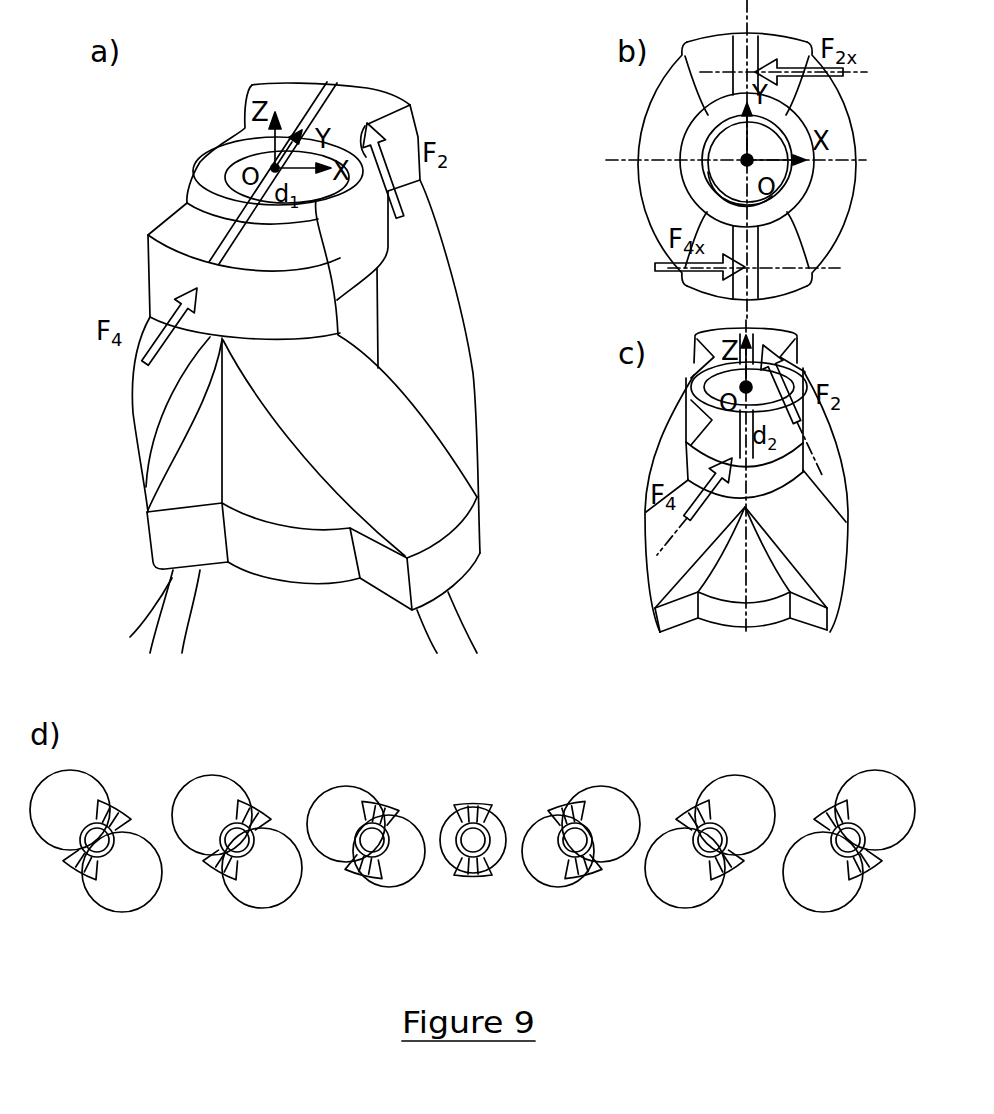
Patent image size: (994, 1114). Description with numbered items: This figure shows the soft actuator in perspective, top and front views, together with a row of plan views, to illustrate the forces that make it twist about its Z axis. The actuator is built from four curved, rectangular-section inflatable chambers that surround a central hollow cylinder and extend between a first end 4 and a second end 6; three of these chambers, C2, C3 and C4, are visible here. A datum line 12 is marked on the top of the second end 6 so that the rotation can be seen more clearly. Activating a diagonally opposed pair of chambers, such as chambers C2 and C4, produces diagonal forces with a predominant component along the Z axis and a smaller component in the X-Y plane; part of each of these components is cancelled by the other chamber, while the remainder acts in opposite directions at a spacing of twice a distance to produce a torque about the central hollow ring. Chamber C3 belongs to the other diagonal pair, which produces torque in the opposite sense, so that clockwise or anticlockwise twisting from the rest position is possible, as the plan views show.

The first end 4 is at (257, 552).
The second end 6 is at (283, 95).
The datum line 12 is at (203, 212).
The inflatable chamber C2 is at (437, 280).
The inflatable chamber C3 is at (380, 470).
The inflatable chamber C4 is at (148, 387).